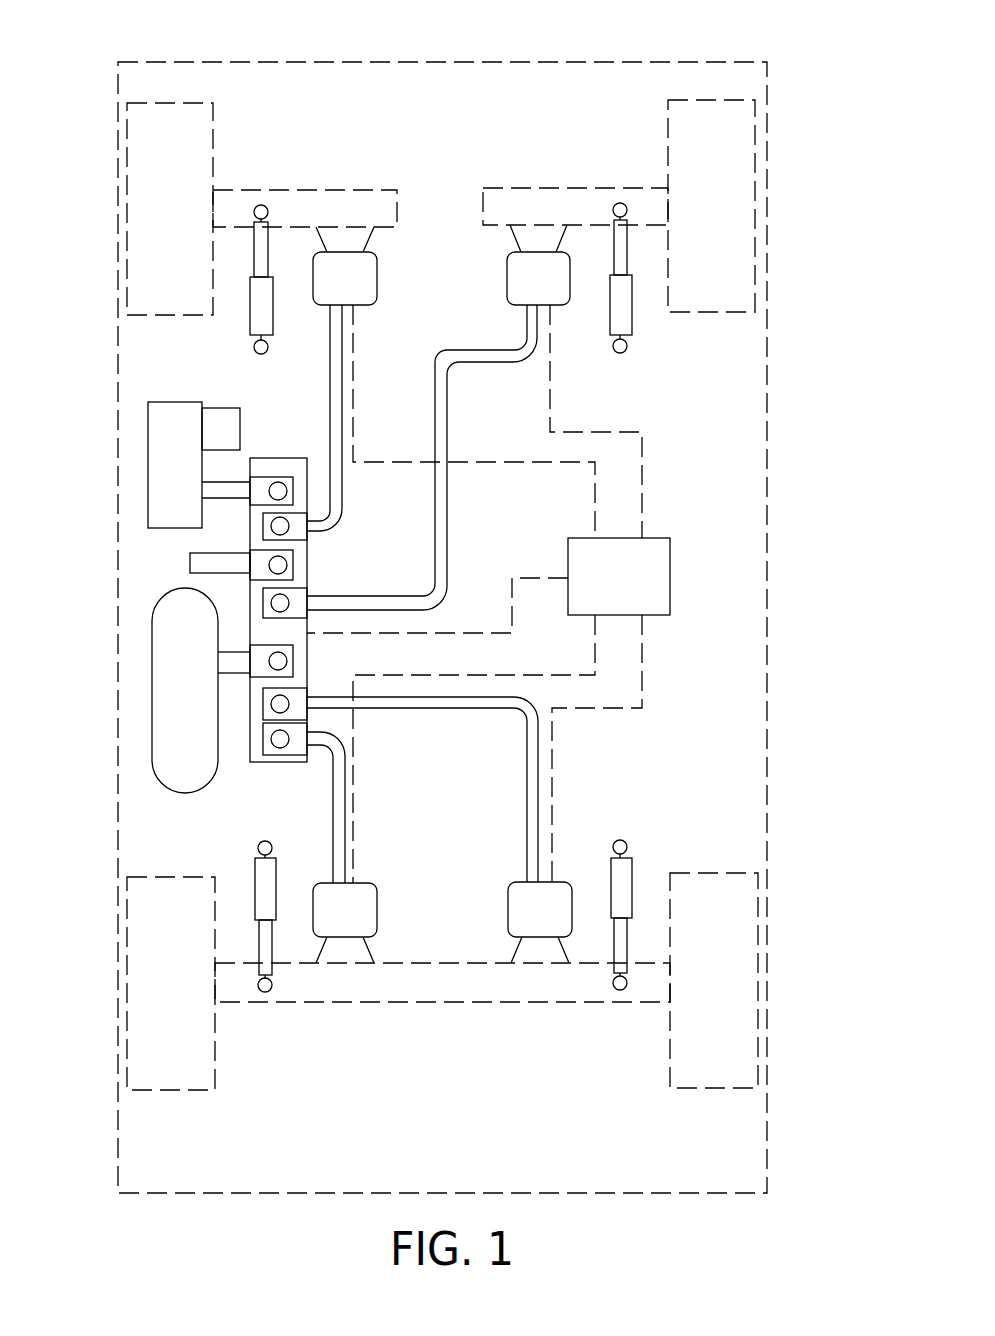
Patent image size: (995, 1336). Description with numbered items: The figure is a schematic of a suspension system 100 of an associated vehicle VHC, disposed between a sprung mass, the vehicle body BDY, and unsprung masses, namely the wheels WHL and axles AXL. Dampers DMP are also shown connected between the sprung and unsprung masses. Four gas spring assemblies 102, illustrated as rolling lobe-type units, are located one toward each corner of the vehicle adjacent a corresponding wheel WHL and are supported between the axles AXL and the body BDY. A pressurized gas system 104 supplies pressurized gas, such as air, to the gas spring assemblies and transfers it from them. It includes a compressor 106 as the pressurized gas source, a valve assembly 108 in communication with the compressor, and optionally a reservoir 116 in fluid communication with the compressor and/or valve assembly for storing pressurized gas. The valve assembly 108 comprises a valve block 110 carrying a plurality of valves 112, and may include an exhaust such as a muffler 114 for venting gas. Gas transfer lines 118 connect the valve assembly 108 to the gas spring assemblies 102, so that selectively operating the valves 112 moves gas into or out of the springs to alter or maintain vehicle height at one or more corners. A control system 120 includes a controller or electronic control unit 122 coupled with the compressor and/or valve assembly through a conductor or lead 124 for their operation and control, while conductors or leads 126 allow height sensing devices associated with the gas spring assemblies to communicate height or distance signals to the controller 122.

The suspension system 100 is at (741, 434).
The gas spring assemblies 102 is at (383, 284).
The pressurized gas system 104 is at (133, 544).
The compressor 106 is at (160, 455).
The valve assembly 108 is at (285, 455).
The valve block 110 is at (288, 763).
The valves 112 is at (287, 495).
The muffler 114 is at (187, 563).
The reservoir 116 is at (170, 670).
The gas transfer lines 118 is at (340, 427).
The control system 120 is at (741, 572).
The controller or electronic control unit (ECU) 122 is at (636, 593).
The conductor or lead 124 is at (538, 577).
The conductors or leads 126 is at (550, 368).
The vehicle VHC is at (787, 107).
The vehicle body BDY is at (638, 60).
The wheel WHL is at (138, 215).
The axle AXL is at (291, 189).
The dampers DMP is at (257, 307).